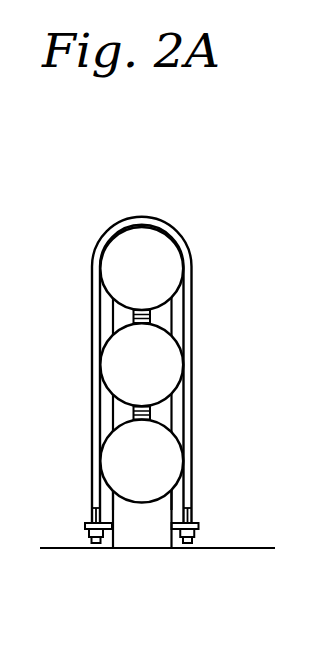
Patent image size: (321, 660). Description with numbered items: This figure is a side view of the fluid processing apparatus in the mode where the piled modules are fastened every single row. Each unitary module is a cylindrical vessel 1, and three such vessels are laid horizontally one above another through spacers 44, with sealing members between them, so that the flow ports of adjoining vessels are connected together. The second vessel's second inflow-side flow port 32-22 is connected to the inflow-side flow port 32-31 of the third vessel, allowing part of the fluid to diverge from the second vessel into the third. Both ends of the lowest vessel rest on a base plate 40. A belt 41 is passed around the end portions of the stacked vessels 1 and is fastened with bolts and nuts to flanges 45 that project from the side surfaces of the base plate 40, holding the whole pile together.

The cylindrical vessel 1 is at (160, 242).
The belt 41 is at (100, 312).
The spacer 44 is at (115, 321).
The inflow-side flow port 32-31 is at (155, 310).
The second inflow-side flow port 32-22 is at (151, 327).
The flange 45 is at (85, 526).
The base plate 40 is at (140, 535).